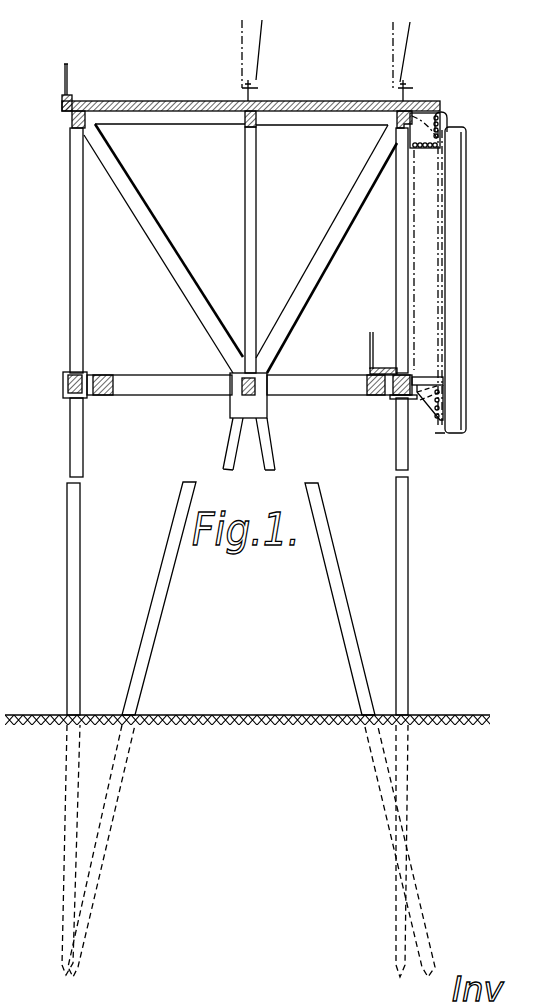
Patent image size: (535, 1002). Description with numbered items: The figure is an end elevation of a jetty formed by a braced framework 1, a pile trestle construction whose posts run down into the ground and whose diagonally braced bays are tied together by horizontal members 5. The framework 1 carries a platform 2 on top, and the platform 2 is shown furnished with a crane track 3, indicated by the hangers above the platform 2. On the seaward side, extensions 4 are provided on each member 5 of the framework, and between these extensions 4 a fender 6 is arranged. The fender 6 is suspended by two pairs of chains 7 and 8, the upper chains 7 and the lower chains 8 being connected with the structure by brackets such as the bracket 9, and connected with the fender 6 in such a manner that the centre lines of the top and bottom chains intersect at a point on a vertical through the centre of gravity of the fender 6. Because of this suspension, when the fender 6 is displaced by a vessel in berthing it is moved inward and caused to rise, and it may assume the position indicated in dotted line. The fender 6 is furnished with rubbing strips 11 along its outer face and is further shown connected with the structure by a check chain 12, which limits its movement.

The braced framework 1 is at (334, 230).
The platform 2 is at (313, 102).
The crane track 3 is at (395, 52).
The extensions 4 is at (412, 128).
The member 5 is at (322, 110).
The fender 6 is at (448, 222).
The chains 7 is at (438, 123).
The chains 8 is at (437, 390).
The brackets 9 is at (433, 118).
The rubbing strips 11 is at (462, 295).
The check chain 12 is at (427, 146).